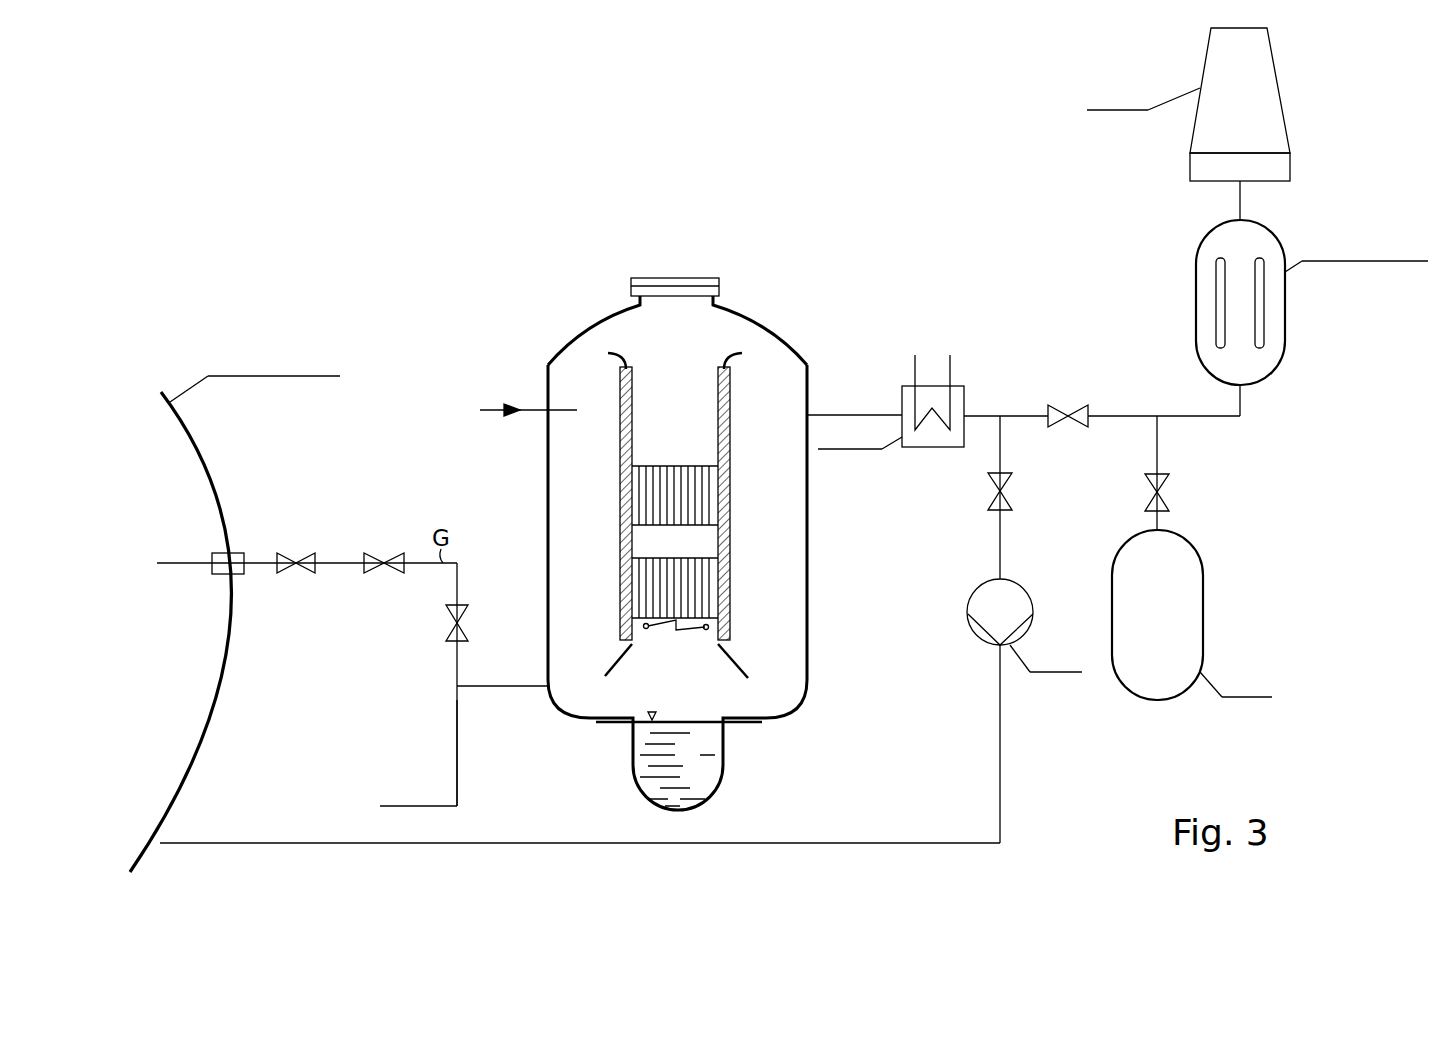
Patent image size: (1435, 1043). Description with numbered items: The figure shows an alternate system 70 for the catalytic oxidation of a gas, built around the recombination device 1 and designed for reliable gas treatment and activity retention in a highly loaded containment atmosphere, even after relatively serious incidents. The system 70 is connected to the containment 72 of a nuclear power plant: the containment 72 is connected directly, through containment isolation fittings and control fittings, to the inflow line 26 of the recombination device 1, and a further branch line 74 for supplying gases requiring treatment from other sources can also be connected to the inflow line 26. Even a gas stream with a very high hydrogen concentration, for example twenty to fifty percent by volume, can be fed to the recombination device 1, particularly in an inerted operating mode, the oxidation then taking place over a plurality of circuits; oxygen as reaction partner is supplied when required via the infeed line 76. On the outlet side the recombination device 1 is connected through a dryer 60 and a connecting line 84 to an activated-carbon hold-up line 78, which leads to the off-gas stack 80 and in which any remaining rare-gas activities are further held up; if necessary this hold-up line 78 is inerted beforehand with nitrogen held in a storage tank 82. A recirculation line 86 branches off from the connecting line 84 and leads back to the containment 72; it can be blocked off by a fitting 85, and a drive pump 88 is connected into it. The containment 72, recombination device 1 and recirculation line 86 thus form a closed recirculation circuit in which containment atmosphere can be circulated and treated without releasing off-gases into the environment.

The recombination device 1 is at (808, 590).
The inflow line 26 is at (457, 673).
The dryer 60 is at (935, 448).
The system 70 is at (806, 243).
The containment 72 is at (206, 463).
The branch line 74 is at (457, 772).
The infeed line 76 is at (545, 408).
The activated-carbon hold-up line 78 is at (1288, 305).
The off-gas stack 80 is at (1264, 87).
The storage tank 82 is at (1205, 617).
The connecting line 84 is at (1119, 416).
The fitting 85 is at (1012, 488).
The recirculation line 86 is at (1000, 810).
The drive pump 88 is at (1034, 620).